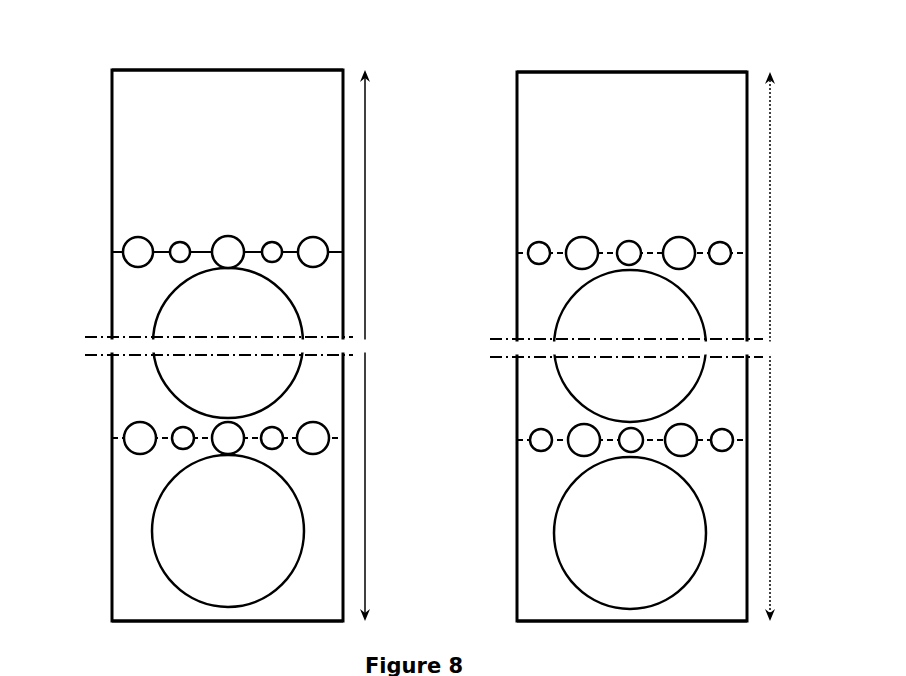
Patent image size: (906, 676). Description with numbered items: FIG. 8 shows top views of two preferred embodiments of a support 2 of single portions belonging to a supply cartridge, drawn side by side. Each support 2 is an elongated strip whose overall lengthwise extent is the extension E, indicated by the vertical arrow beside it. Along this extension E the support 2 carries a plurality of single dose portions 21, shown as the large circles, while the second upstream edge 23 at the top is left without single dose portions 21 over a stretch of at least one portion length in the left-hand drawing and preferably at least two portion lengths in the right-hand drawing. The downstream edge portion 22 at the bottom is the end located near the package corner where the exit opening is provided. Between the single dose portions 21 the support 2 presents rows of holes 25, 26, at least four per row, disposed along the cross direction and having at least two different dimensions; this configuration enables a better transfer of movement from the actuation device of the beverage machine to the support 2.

The support of single portions 2 is at (394, 335).
The second upstream edge 23 is at (409, 85).
The downstream edge portion 22 is at (408, 611).
The single dose portion 21 is at (418, 441).
The hole 25 is at (410, 338).
The hole 26 is at (451, 336).
The extension E is at (442, 345).